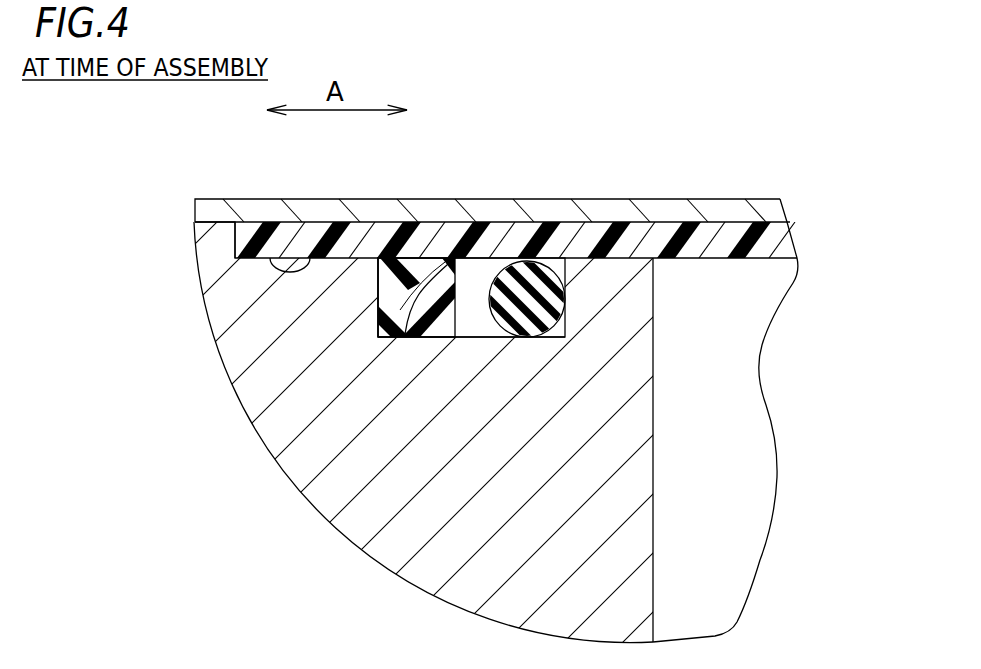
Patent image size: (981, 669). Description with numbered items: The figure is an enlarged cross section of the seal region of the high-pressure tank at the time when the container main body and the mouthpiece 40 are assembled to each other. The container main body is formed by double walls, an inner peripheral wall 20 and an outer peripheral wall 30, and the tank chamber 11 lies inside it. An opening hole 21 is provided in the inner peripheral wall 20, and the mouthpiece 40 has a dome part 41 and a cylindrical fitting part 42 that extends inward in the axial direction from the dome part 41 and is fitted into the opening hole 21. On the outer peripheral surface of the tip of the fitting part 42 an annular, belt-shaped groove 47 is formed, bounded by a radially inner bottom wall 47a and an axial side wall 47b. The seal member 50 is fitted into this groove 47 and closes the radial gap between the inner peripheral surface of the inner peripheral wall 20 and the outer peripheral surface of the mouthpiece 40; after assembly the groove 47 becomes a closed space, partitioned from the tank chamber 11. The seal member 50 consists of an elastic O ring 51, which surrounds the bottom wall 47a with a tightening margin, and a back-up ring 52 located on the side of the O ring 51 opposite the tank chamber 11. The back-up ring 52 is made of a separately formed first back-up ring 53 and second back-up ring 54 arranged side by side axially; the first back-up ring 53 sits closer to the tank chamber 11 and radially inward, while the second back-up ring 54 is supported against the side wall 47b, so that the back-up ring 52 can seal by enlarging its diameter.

The tank chamber 11 is at (733, 482).
The inner peripheral wall 20 is at (770, 238).
The opening hole 21 is at (270, 250).
The outer peripheral wall 30 is at (716, 205).
The mouthpiece 40 is at (490, 430).
The dome part 41 is at (210, 235).
The fitting part 42 is at (392, 558).
The groove 47 is at (526, 345).
The bottom wall 47a is at (460, 337).
The side wall 47b is at (374, 258).
The seal member 50 is at (549, 210).
The O ring 51 is at (553, 263).
The back-up ring 52 is at (489, 203).
The first back-up ring 53 is at (452, 262).
The second back-up ring 54 is at (412, 265).